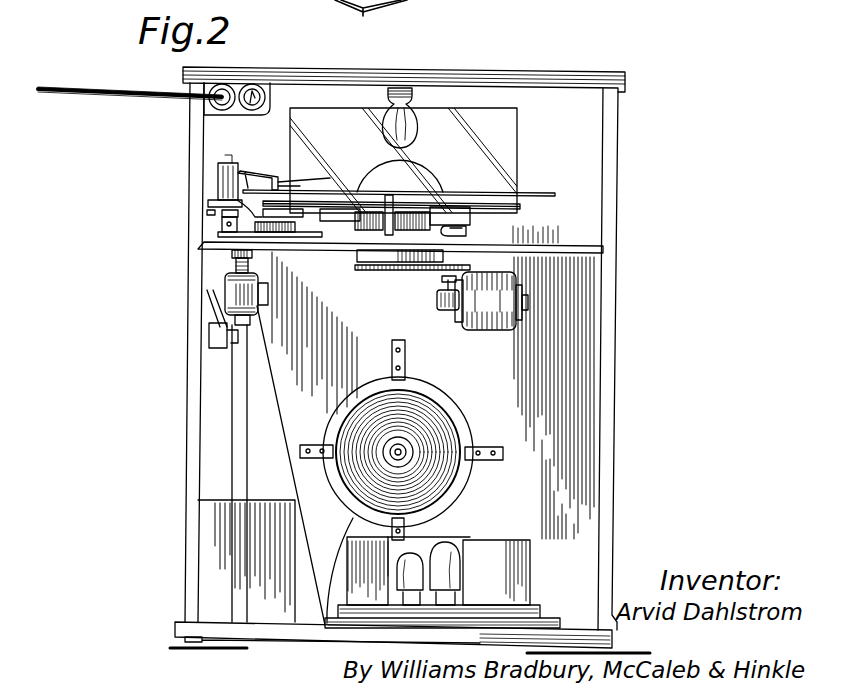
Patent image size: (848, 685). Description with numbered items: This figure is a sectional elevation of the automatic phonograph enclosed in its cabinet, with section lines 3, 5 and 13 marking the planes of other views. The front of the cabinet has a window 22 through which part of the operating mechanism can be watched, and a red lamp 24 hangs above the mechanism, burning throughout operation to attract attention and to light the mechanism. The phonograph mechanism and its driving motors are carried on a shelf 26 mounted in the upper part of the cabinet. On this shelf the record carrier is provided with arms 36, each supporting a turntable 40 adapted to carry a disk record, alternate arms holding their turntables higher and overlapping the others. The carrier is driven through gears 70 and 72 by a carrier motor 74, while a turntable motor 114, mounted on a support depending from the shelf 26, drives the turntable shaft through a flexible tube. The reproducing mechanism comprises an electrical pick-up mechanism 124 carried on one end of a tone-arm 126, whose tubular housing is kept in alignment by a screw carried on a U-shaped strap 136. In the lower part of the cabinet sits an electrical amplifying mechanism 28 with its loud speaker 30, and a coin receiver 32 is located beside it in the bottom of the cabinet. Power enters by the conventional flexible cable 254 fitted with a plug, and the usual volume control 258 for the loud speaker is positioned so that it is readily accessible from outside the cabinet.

The flexible cable 254 is at (101, 98).
The volume control 258 is at (256, 88).
The red lamp 24 is at (425, 108).
The window 22 is at (478, 128).
The tone-arm 126 is at (259, 170).
The electrical pick-up mechanism 124 is at (290, 182).
The U-shaped strap 136 is at (227, 163).
The turntable 40 is at (510, 201).
The arm 36 is at (466, 232).
The shelf 26 is at (585, 250).
The turntable motor 114 is at (228, 292).
The gear 70 is at (421, 273).
The gear 72 is at (447, 283).
The carrier motor 74 is at (516, 323).
The loud speaker 30 is at (445, 440).
The electrical amplifying mechanism 28 is at (520, 548).
The coin receiver 32 is at (215, 552).
The section line 3- 3 is at (135, 176).
The section line 5- 5 is at (145, 233).
The section line 13- 13 is at (165, 300).